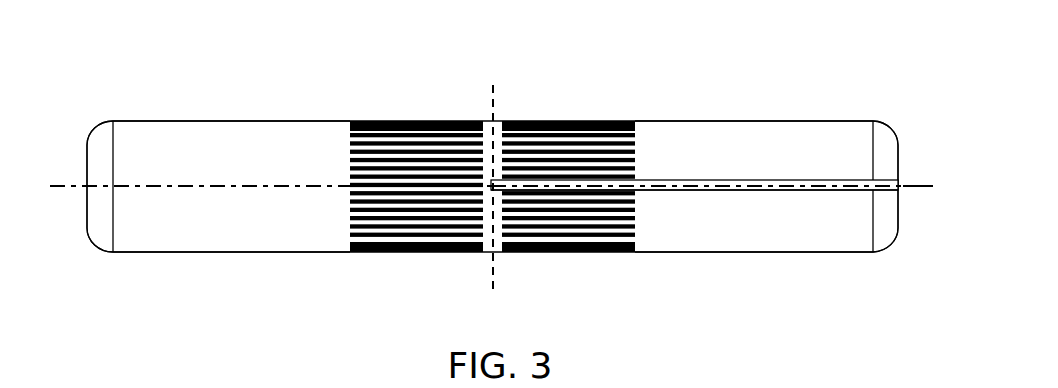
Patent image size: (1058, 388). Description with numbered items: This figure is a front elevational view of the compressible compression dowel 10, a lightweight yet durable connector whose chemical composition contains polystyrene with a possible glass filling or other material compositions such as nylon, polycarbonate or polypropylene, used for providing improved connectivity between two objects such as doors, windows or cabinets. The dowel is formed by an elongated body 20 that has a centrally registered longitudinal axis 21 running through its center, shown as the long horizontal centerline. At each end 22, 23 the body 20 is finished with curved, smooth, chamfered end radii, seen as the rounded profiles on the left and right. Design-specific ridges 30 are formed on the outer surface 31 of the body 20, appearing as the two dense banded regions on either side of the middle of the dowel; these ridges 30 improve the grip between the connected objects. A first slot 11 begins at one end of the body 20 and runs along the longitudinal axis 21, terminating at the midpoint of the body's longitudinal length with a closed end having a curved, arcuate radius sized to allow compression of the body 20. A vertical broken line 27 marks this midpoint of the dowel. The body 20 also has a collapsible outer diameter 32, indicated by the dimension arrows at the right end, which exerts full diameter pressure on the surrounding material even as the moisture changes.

The compression dowel 10 is at (253, 85).
The first slot 11 is at (728, 178).
The body 20 is at (267, 251).
The longitudinal axis 21 is at (805, 184).
The end 22 is at (96, 127).
The end 23 is at (887, 123).
The center plane 27 is at (495, 110).
The ridges 30 is at (420, 118).
The outer surface 31 is at (313, 245).
The collapsible outer diameter 32 is at (692, 120).